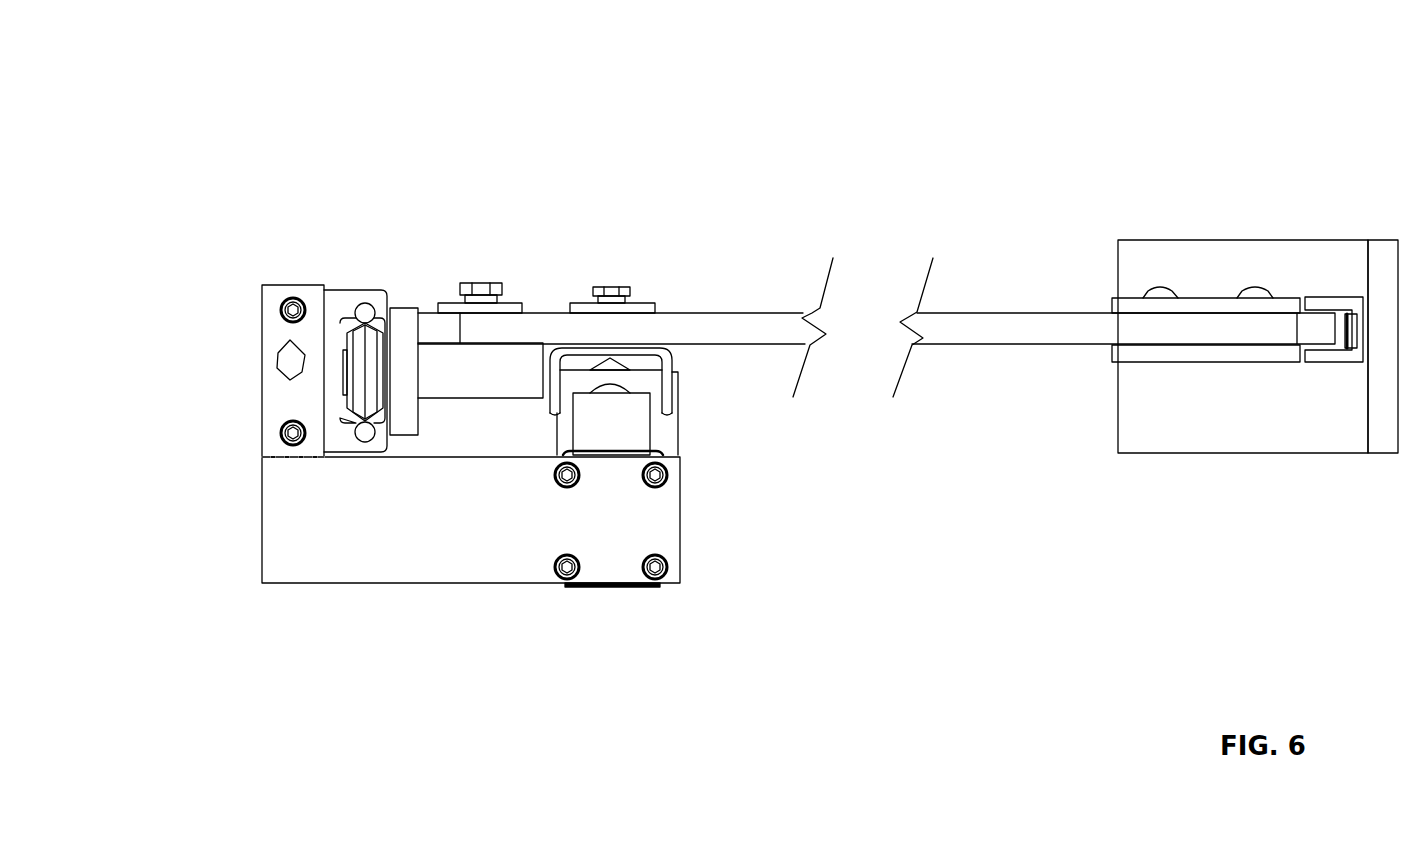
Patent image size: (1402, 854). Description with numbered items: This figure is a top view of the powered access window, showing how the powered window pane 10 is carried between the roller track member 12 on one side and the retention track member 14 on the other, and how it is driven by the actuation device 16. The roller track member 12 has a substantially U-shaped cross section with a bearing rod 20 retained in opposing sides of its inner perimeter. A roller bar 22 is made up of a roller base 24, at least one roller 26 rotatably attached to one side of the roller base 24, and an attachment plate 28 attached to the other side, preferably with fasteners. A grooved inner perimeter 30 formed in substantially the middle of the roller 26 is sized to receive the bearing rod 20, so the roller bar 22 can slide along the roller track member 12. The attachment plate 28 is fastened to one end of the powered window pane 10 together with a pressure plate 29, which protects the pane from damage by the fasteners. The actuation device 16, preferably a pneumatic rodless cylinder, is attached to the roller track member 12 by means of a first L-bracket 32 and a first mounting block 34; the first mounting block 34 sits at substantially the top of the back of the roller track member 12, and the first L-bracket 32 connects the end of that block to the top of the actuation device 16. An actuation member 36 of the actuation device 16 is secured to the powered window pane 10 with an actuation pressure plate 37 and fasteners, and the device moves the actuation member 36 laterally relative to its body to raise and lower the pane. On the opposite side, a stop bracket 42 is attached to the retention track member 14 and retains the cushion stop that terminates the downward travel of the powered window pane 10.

The powered window pane 10 is at (1033, 328).
The roller track member 12 is at (377, 297).
The retention track member 14 is at (1338, 365).
The actuation device 16 is at (655, 586).
The bearing rod 20 is at (363, 305).
The roller bar 22 is at (525, 352).
The roller base 24 is at (408, 400).
The roller 26 is at (350, 408).
The attachment plate 28 is at (453, 370).
The pressure plate 29 is at (513, 306).
The grooved inner perimeter 30 is at (362, 440).
The first L-bracket 32 is at (613, 560).
The first mounting block 34 is at (290, 357).
The actuation member 36 is at (672, 405).
The actuation pressure plate 37 is at (645, 308).
The stop bracket 42 is at (1251, 260).